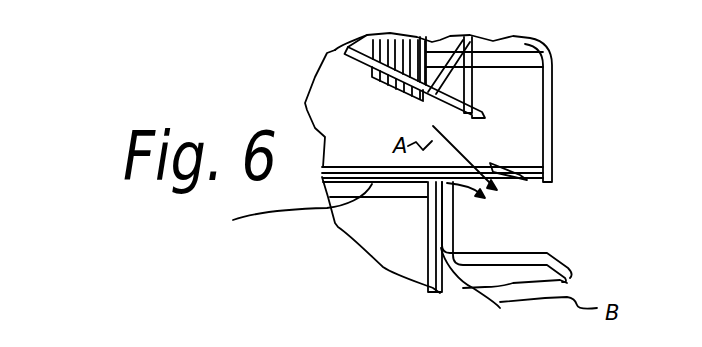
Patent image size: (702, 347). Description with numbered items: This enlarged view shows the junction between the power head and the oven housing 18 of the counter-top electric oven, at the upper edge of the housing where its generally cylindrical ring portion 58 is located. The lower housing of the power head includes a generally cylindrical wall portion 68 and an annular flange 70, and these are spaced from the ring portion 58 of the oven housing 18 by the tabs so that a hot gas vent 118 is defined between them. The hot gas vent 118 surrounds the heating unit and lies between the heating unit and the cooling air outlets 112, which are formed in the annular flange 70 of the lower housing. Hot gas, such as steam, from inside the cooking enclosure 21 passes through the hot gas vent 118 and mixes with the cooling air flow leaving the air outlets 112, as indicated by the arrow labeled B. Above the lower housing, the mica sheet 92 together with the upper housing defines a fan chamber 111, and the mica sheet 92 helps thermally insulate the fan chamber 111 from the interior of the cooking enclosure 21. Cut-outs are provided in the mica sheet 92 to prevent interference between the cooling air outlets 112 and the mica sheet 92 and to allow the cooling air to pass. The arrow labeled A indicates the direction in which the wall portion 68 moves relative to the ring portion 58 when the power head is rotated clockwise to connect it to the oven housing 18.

The fan chamber 111 is at (333, 67).
The mica sheet 92 is at (350, 167).
The cooling air outlets 112 is at (502, 167).
The hot gas vent 118 is at (427, 206).
The annular flange 70 is at (294, 218).
The cylindrical wall portion 68 is at (433, 238).
The oven housing 18 is at (517, 252).
The cylindrical ring portion 58 is at (457, 217).
The cooking enclosure 21 is at (572, 262).